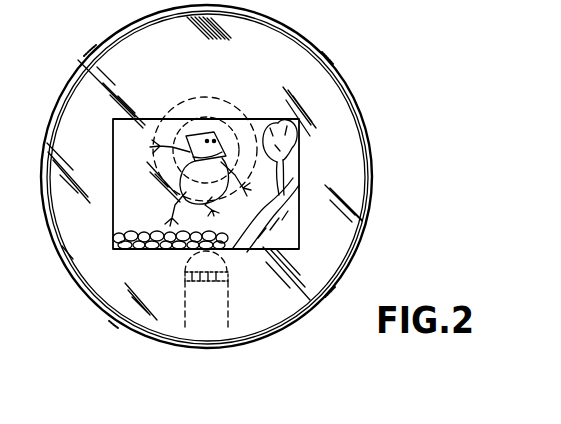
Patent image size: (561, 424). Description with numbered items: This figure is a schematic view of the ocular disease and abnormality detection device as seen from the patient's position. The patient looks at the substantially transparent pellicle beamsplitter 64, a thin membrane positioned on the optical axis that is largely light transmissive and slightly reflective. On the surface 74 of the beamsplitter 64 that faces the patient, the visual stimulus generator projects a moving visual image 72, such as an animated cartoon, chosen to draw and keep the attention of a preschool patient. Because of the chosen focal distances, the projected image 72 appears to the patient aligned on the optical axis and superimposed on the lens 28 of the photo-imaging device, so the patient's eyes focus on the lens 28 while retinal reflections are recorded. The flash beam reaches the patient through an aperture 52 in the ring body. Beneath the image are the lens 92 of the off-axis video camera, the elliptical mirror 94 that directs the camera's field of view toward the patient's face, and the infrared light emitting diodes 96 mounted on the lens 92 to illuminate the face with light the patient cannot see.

The pellicle beamsplitter 64 is at (322, 43).
The surface of the beamsplitter 74 is at (335, 104).
The visual image 72 is at (235, 155).
The aperture 52 is at (178, 99).
The lens 28 is at (250, 99).
The elliptical mirror 94 is at (184, 264).
The infrared light emitting diodes 96 is at (230, 274).
The lens 92 is at (228, 316).